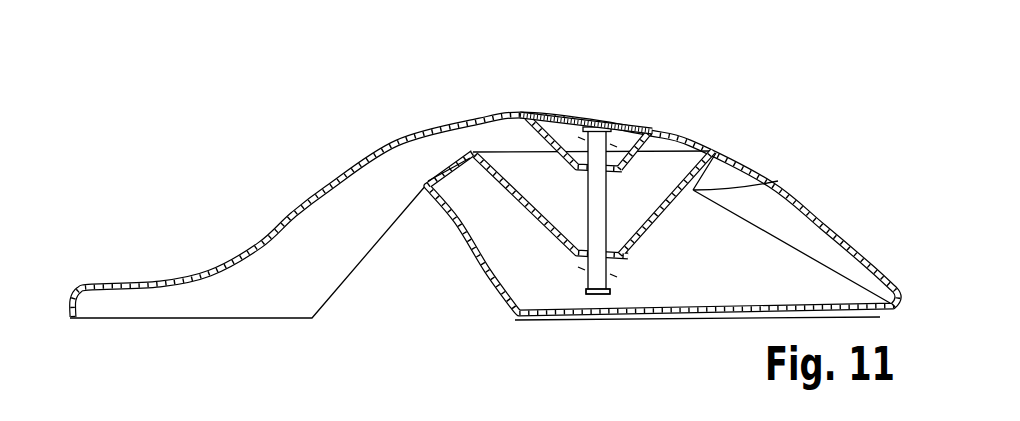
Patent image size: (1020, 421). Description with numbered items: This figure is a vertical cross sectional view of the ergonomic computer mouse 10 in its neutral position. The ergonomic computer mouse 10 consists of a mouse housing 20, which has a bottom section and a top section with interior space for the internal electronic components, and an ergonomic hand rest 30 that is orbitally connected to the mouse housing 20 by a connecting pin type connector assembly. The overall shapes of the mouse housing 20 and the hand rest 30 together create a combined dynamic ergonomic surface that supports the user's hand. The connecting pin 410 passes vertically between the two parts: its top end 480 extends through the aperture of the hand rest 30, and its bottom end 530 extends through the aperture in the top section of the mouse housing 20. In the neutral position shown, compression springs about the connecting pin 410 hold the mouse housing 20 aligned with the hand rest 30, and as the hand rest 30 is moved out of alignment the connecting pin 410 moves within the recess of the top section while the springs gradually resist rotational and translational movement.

The ergonomic computer mouse 10 is at (757, 113).
The mouse housing 20 is at (852, 204).
The hand rest 30 is at (215, 215).
The connecting pin 410 is at (597, 213).
The top end of the connecting pin 480 is at (583, 113).
The bottom end of the connecting pin 530 is at (598, 275).